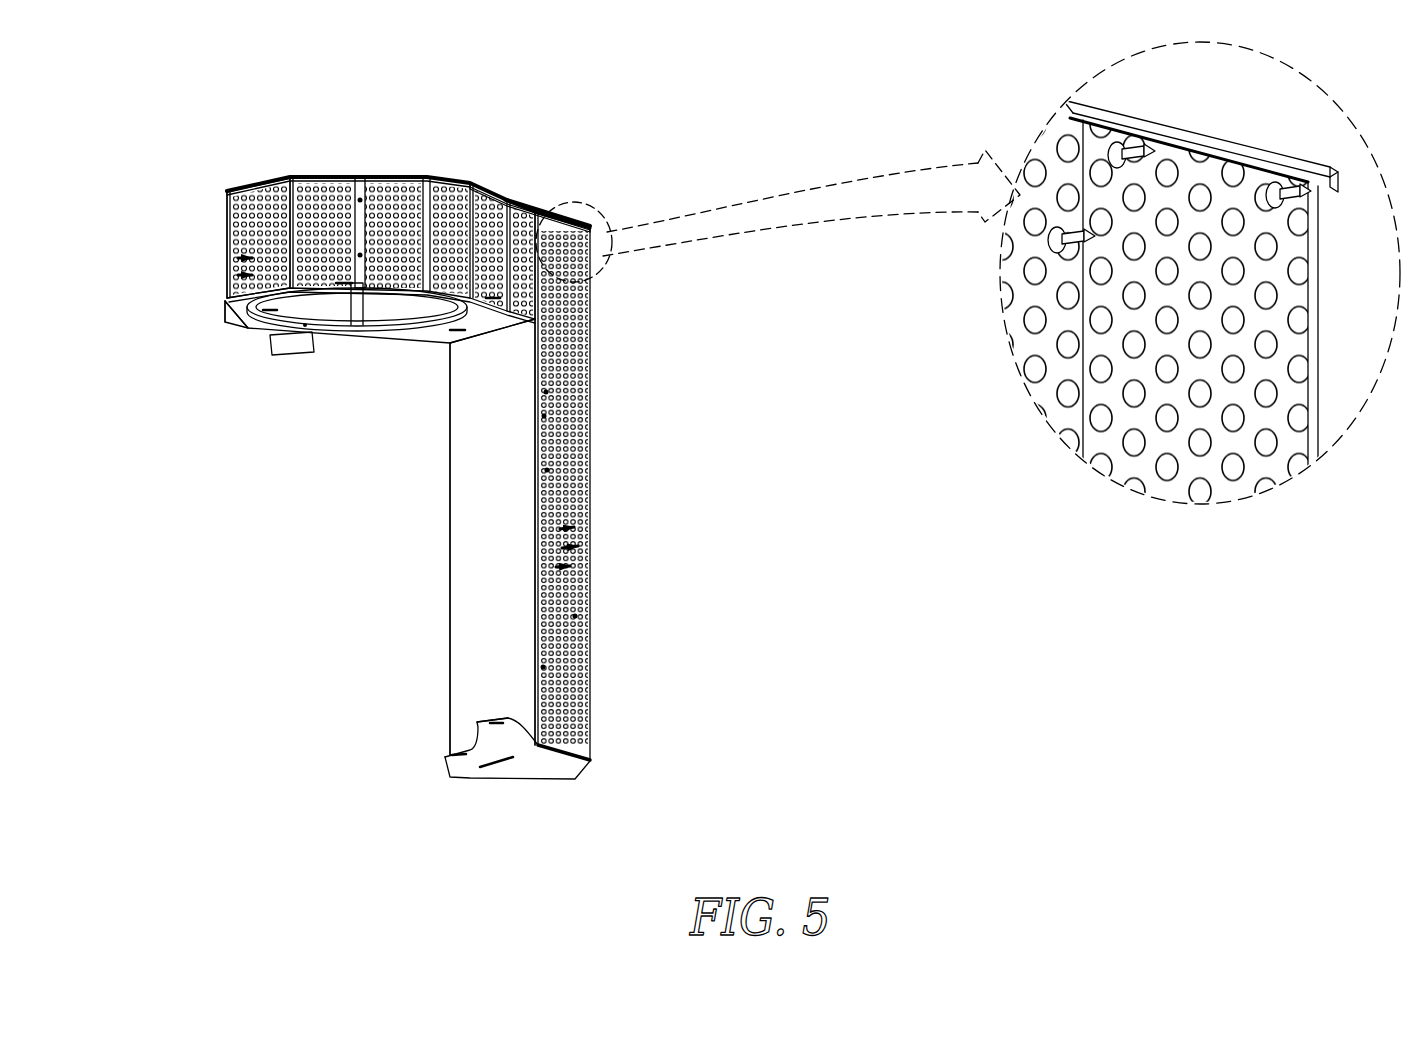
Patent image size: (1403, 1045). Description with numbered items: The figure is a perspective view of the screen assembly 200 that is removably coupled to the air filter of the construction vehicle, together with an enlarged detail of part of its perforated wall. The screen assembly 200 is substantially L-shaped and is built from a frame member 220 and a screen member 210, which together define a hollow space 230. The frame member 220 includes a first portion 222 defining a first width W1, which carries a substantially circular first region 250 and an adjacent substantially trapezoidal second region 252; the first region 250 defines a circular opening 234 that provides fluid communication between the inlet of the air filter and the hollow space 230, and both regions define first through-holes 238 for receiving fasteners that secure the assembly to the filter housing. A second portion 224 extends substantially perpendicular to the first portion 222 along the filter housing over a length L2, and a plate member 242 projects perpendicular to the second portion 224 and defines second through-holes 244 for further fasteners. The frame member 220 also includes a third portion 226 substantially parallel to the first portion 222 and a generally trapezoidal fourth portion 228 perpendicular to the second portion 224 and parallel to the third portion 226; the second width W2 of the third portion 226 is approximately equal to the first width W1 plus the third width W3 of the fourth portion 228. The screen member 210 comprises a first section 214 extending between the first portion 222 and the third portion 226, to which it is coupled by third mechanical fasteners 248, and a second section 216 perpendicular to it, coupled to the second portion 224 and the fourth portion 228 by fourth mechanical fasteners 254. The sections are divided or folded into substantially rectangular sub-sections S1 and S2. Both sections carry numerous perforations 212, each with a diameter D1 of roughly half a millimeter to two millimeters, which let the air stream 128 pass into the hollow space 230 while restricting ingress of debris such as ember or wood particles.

The air stream 128 is at (600, 489).
The screen assembly 200 is at (778, 202).
The screen member 210 is at (605, 372).
The perforations 212 is at (228, 258).
The first section 214 is at (205, 252).
The second section 216 is at (600, 331).
The frame member 220 is at (430, 523).
The first portion 222 is at (427, 338).
The second portion 224 is at (482, 578).
The third portion 226 is at (527, 210).
The fourth portion 228 is at (565, 767).
The hollow space 230 is at (418, 308).
The opening 234 is at (268, 314).
The first through-holes 238 is at (343, 291).
The plate member 242 is at (510, 738).
The second through-holes 244 is at (455, 764).
The third mechanical fasteners 248 is at (462, 183).
The first region 250 is at (240, 320).
The second region 252 is at (494, 312).
The fourth mechanical fasteners 254 is at (577, 616).
The first width W1 is at (224, 300).
The second width W2 is at (590, 225).
The third width W3 is at (590, 765).
The length L2 is at (597, 318).
The diameter D1 is at (968, 265).
The sub-sections S1 is at (228, 216).
The sub-sections S2 is at (592, 579).